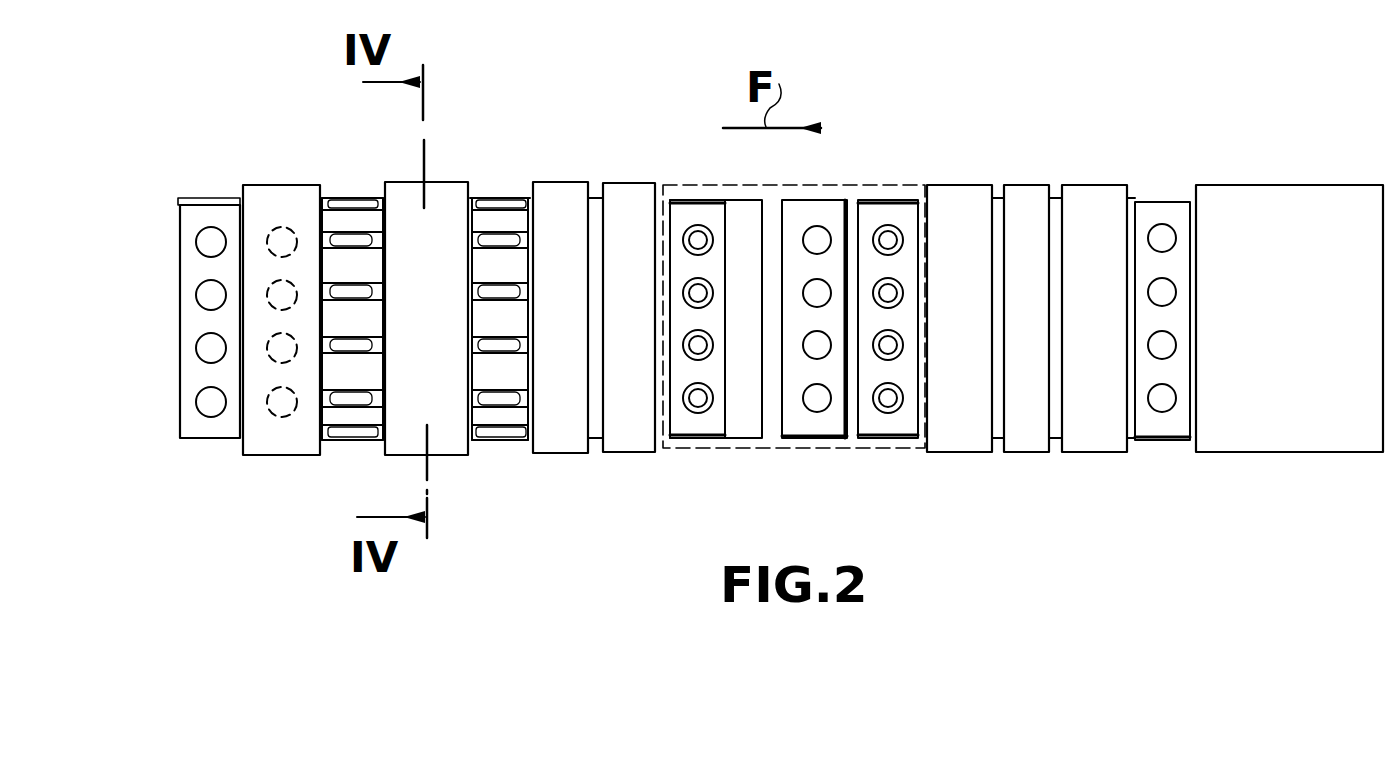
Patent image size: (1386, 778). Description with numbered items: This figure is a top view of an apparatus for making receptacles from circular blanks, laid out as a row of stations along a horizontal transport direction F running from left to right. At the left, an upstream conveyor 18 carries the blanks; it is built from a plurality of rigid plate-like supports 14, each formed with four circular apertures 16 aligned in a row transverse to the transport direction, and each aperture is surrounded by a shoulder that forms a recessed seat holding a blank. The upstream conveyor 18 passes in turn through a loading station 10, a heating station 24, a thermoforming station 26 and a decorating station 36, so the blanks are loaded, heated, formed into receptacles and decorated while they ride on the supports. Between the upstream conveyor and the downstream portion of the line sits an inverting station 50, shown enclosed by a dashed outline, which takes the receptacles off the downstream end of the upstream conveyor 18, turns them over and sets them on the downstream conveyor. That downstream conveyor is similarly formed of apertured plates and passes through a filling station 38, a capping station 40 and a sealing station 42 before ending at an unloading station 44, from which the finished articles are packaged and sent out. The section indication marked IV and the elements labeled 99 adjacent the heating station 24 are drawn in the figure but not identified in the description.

The loading station 10 is at (262, 202).
The rigid plate-like support 14 is at (187, 300).
The circular aperture 16 is at (202, 353).
The upstream conveyor 18 is at (193, 194).
The heating station 24 is at (453, 205).
The thermoforming station 26 is at (563, 202).
The decorating station 36 is at (624, 204).
The filling station 38 is at (952, 207).
The capping station 40 is at (1027, 207).
The sealing station 42 is at (1098, 207).
The unloading station 44 is at (1295, 202).
The inverting station 50 is at (853, 184).
The stacked elements 99 is at (360, 270).